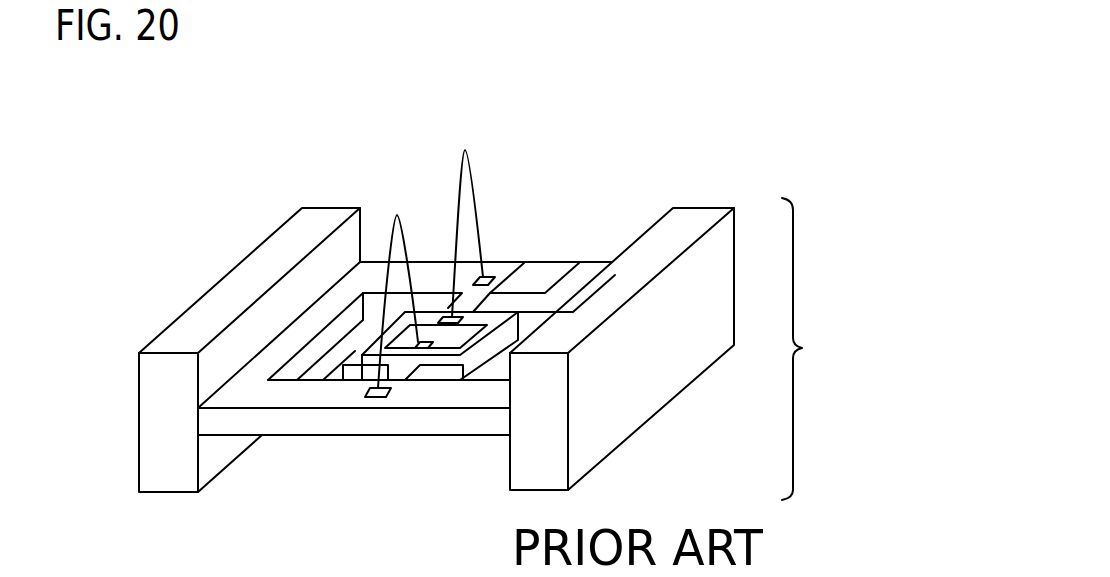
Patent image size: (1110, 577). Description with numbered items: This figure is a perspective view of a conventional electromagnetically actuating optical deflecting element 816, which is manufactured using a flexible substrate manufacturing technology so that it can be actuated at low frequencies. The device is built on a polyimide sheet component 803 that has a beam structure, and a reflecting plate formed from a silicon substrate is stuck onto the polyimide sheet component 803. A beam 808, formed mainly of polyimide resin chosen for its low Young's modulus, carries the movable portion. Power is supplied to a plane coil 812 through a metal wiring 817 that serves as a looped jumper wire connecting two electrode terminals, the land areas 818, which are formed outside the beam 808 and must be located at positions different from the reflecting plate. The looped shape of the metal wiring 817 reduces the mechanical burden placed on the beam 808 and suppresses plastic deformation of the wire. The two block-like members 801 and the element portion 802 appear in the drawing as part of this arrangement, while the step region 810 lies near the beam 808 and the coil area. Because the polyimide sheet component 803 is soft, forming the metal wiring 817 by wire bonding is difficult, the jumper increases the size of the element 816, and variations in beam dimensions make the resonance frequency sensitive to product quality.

The block member 801 is at (466, 298).
The element chip 802 is at (430, 228).
The polyimide sheet component 803 is at (500, 508).
The beam 808 is at (564, 205).
The step portion 810 is at (537, 189).
The plane coil 812 is at (379, 208).
The optical deflecting element 816 is at (820, 349).
The metal wiring 817 is at (417, 179).
The land areas 818 is at (587, 230).